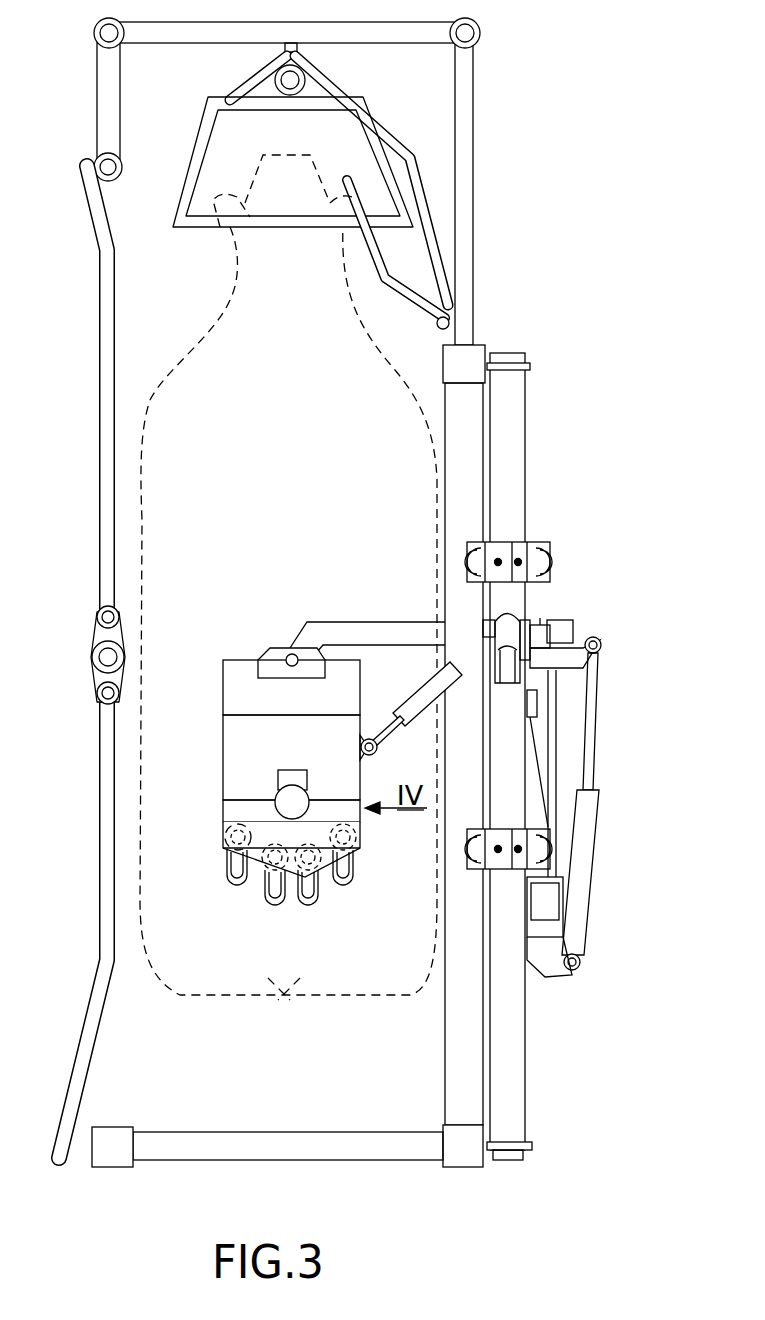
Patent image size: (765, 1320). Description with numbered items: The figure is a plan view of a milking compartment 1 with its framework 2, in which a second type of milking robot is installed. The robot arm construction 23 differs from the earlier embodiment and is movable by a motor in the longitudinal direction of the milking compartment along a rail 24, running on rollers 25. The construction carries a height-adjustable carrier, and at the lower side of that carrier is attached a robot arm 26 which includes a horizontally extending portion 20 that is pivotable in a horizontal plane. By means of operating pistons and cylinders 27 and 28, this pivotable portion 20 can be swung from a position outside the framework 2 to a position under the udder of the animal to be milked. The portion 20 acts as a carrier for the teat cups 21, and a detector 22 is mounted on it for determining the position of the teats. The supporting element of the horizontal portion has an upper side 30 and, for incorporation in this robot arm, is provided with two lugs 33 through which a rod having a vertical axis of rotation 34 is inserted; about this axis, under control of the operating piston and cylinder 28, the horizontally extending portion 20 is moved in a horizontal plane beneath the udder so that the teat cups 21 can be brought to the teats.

The milking compartment 1 is at (185, 1088).
The framework 2 is at (207, 40).
The horizontally extending portion 20 is at (245, 778).
The teat cups 21 is at (275, 902).
The detector 22 is at (293, 773).
The robot arm construction 23 is at (306, 488).
The rail 24 is at (520, 425).
The rollers 25 is at (540, 542).
The robot arm 26 is at (366, 697).
The operating piston and cylinder 27 is at (585, 830).
The operating piston and cylinder 28 is at (420, 708).
The upper side 30 is at (243, 735).
The lugs 33 is at (262, 655).
The vertical axis of rotation 34 is at (292, 653).